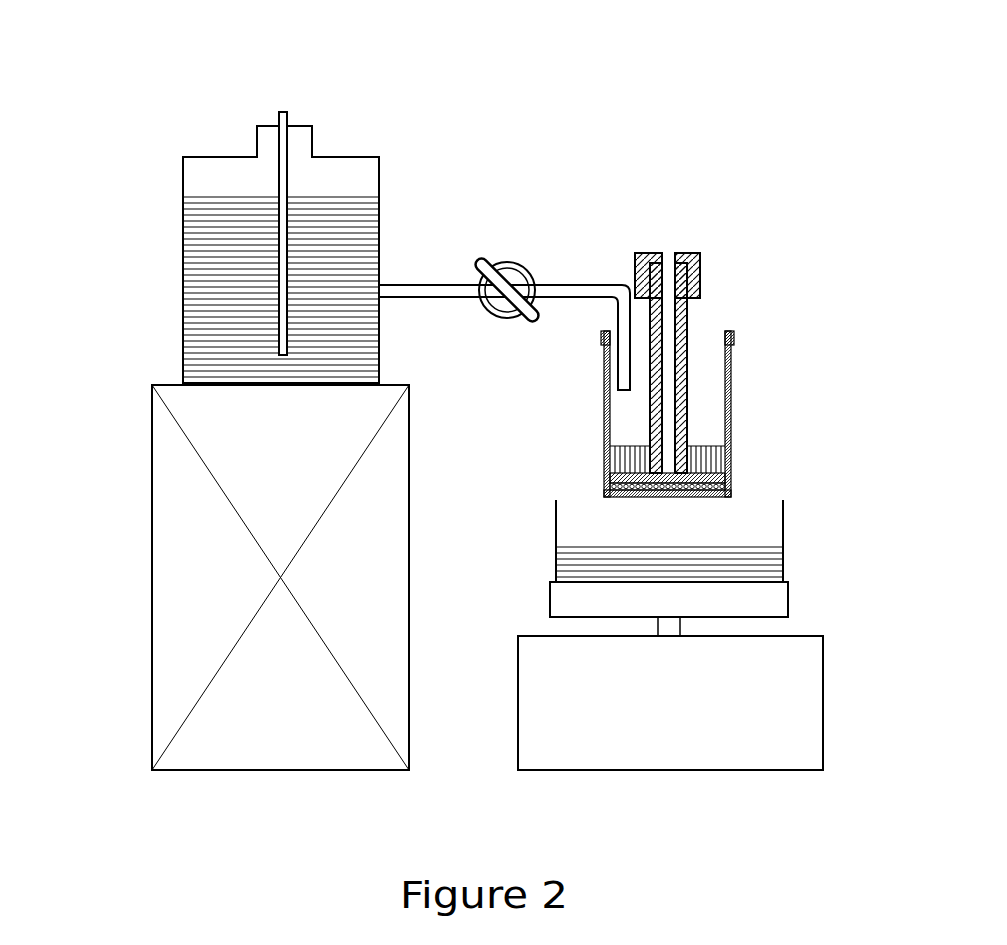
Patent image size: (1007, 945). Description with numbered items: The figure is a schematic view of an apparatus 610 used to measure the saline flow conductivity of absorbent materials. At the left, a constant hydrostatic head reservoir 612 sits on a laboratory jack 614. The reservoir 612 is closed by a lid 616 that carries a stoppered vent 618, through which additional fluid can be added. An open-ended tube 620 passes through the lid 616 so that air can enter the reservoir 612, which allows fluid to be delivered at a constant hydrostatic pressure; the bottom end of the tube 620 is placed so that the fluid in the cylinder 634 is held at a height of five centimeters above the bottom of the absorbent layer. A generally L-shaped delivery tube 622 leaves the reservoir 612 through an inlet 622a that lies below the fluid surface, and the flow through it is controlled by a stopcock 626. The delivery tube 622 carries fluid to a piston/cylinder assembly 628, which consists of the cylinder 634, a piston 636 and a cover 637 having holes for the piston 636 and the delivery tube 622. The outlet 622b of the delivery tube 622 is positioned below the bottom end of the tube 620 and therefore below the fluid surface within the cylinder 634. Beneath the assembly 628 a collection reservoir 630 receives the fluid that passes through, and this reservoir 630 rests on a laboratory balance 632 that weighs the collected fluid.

The apparatus 610 is at (481, 111).
The constant hydrostatic head reservoir 612 is at (183, 247).
The laboratory jack 614 is at (152, 520).
The lid 616 is at (349, 154).
The stoppered vent 618 is at (210, 156).
The open-ended tube 620 is at (282, 150).
The delivery tube 622 is at (434, 283).
The inlet 622a is at (382, 290).
The outlet 622b is at (625, 393).
The stopcock 626 is at (522, 263).
The piston/cylinder assembly 628 is at (724, 365).
The collection reservoir 630 is at (802, 556).
The laboratory balance 632 is at (831, 701).
The cylinder 634 is at (732, 412).
The piston 636 is at (697, 355).
The cover 637 is at (603, 340).